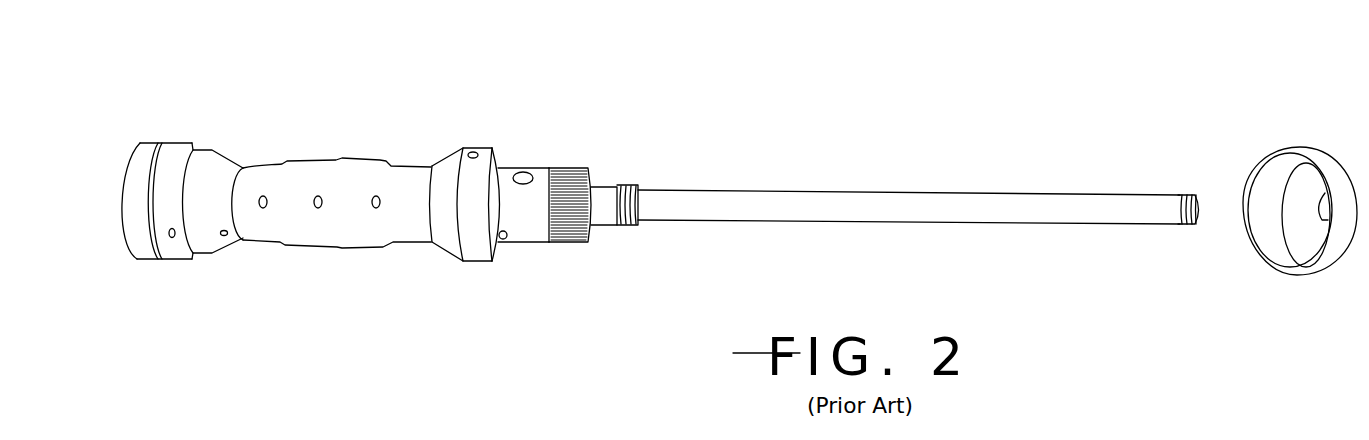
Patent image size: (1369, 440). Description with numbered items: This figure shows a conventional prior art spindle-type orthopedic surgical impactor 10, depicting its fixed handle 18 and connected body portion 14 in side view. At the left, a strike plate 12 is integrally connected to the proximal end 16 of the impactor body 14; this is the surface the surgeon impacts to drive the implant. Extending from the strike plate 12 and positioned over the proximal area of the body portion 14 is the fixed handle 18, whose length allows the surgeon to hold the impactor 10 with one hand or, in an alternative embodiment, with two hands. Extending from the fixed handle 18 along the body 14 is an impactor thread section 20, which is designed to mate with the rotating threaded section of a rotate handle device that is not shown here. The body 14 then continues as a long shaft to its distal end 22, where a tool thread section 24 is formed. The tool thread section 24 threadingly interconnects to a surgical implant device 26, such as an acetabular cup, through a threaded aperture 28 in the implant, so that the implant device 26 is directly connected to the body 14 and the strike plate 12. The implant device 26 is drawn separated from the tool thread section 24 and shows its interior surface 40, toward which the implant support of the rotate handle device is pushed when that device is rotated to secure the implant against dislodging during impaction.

The spindle-type orthopedic surgical impactor 10 is at (491, 104).
The strike plate 12 is at (133, 142).
The impactor body 14 is at (1195, 270).
The proximal end 16 is at (146, 238).
The fixed handle 18 is at (305, 162).
The impactor thread section 20 is at (619, 182).
The distal end 22 is at (1206, 212).
The tool thread section 24 is at (1188, 195).
The surgical implant device 26 is at (1323, 157).
The threaded aperture 28 is at (1322, 207).
The interior surface 40 is at (1263, 197).